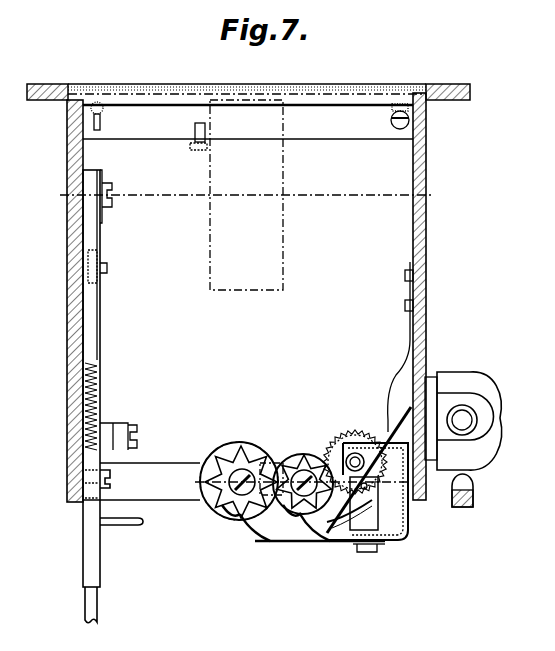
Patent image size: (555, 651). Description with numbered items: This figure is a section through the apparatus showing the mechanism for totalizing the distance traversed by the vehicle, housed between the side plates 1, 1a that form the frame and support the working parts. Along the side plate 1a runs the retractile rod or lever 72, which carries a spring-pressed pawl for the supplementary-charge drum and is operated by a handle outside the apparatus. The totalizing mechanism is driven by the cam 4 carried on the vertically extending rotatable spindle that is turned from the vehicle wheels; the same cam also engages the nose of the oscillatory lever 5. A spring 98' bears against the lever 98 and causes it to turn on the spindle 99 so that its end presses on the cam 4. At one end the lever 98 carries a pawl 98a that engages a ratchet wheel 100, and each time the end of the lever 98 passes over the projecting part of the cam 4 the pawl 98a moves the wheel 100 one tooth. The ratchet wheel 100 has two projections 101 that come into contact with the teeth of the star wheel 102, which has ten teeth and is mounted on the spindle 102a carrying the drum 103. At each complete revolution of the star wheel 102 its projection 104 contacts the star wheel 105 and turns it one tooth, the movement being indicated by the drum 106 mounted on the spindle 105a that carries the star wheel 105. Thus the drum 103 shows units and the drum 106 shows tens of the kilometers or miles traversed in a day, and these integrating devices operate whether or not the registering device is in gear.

The side plate 1 is at (420, 243).
The side plate 1a is at (80, 245).
The cam 4 is at (467, 385).
The oscillatory lever 5 is at (475, 500).
The rod or lever 72 is at (93, 574).
The lever 98 is at (367, 456).
The spring 98' is at (383, 347).
The pawl 98a is at (331, 521).
The spindle 99 is at (357, 449).
The ratchet wheel 100 is at (354, 533).
The projections 101 is at (340, 424).
The star wheel 102 is at (268, 446).
The spindle 102a is at (243, 522).
The drum 103 is at (293, 517).
The projection 104 is at (302, 457).
The star wheel 105 is at (205, 467).
The spindle 105a is at (222, 505).
The drum 106 is at (215, 500).